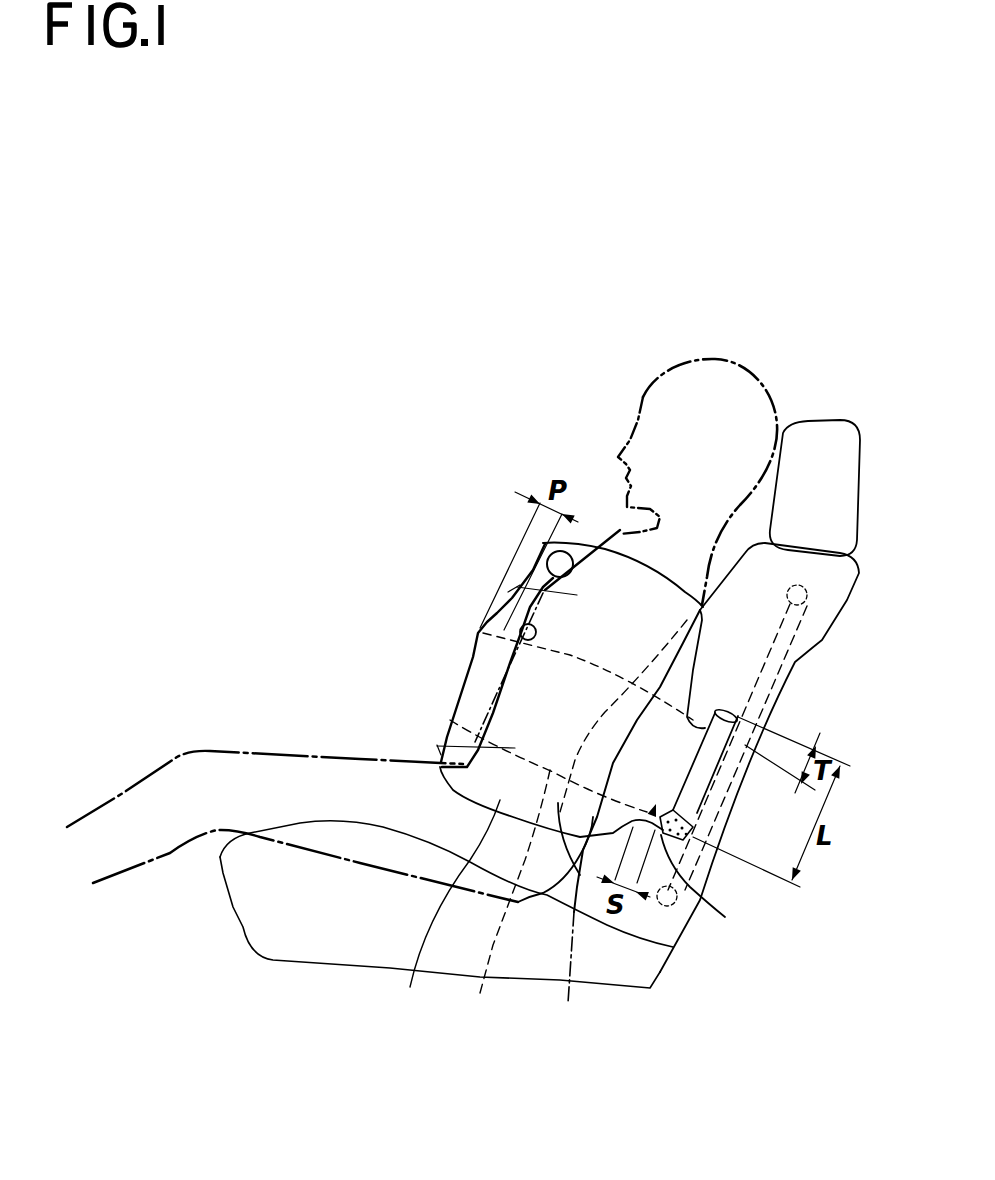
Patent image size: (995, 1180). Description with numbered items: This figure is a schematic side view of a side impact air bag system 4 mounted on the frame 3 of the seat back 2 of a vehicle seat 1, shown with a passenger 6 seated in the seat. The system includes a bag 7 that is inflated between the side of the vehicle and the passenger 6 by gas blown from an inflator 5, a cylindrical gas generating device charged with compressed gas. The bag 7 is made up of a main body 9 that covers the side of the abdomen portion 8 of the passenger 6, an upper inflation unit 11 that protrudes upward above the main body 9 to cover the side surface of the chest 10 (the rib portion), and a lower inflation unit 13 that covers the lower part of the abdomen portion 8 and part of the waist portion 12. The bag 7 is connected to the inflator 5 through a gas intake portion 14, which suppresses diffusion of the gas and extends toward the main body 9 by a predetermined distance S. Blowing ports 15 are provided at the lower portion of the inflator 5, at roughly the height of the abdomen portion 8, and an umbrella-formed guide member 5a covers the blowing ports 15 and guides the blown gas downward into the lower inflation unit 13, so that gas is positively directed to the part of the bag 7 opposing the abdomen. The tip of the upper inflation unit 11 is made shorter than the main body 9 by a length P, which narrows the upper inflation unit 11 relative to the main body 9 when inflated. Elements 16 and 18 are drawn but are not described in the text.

The vehicle seat 1 is at (703, 973).
The seat back 2 is at (808, 650).
The frame 3 is at (765, 692).
The side impact air bag system 4 is at (672, 843).
The inflator 5 is at (725, 711).
The guide member 5a is at (694, 838).
The passenger 6 is at (648, 390).
The bag 7 is at (432, 707).
The abdomen portion 8 is at (437, 745).
The main body 9 is at (522, 686).
The chest 10 is at (520, 585).
The upper inflation unit 11 is at (613, 563).
The waist portion 12 is at (572, 976).
The lower inflation unit 13 is at (444, 912).
The gas intake portion 14 is at (709, 887).
The blowing ports 15 is at (690, 828).
The shoulder ring 16 is at (540, 545).
The guide ring 18 is at (520, 632).